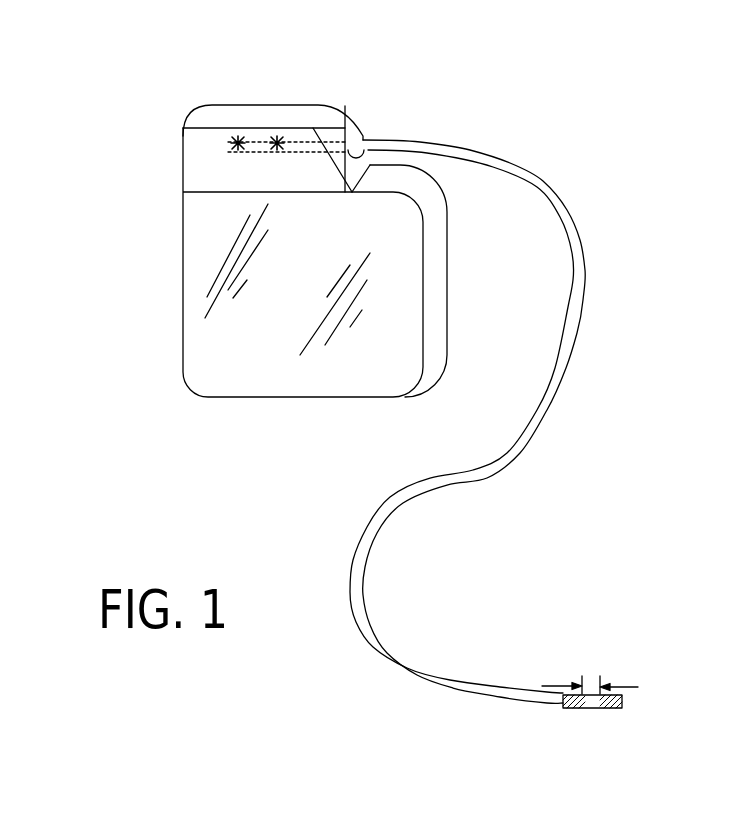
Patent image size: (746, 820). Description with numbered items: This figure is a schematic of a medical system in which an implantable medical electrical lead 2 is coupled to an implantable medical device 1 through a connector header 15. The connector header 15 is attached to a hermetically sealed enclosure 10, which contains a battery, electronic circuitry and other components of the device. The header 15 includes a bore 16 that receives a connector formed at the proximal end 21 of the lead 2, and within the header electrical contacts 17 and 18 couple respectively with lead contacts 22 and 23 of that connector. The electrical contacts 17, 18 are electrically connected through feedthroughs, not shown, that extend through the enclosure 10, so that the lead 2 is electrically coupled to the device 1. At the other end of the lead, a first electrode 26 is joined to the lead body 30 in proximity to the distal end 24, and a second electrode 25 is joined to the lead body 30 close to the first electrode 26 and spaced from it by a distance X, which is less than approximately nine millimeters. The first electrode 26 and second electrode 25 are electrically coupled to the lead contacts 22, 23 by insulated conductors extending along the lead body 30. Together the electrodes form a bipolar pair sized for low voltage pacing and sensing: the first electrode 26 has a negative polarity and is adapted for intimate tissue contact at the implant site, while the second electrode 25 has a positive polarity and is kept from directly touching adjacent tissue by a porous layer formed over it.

The implantable medical device 1 is at (127, 293).
The implantable medical electrical lead 2 is at (592, 166).
The hermetically sealed enclosure 10 is at (282, 372).
The connector header 15 is at (202, 172).
The bore 16 is at (345, 108).
The electrical contact 17 is at (237, 143).
The electrical contact 18 is at (284, 143).
The proximal end 21 is at (369, 132).
The lead contact 22 is at (230, 142).
The lead contact 23 is at (313, 128).
The distal end 24 is at (623, 659).
The second electrode 25 is at (578, 710).
The first electrode 26 is at (610, 710).
The lead body 30 is at (490, 474).